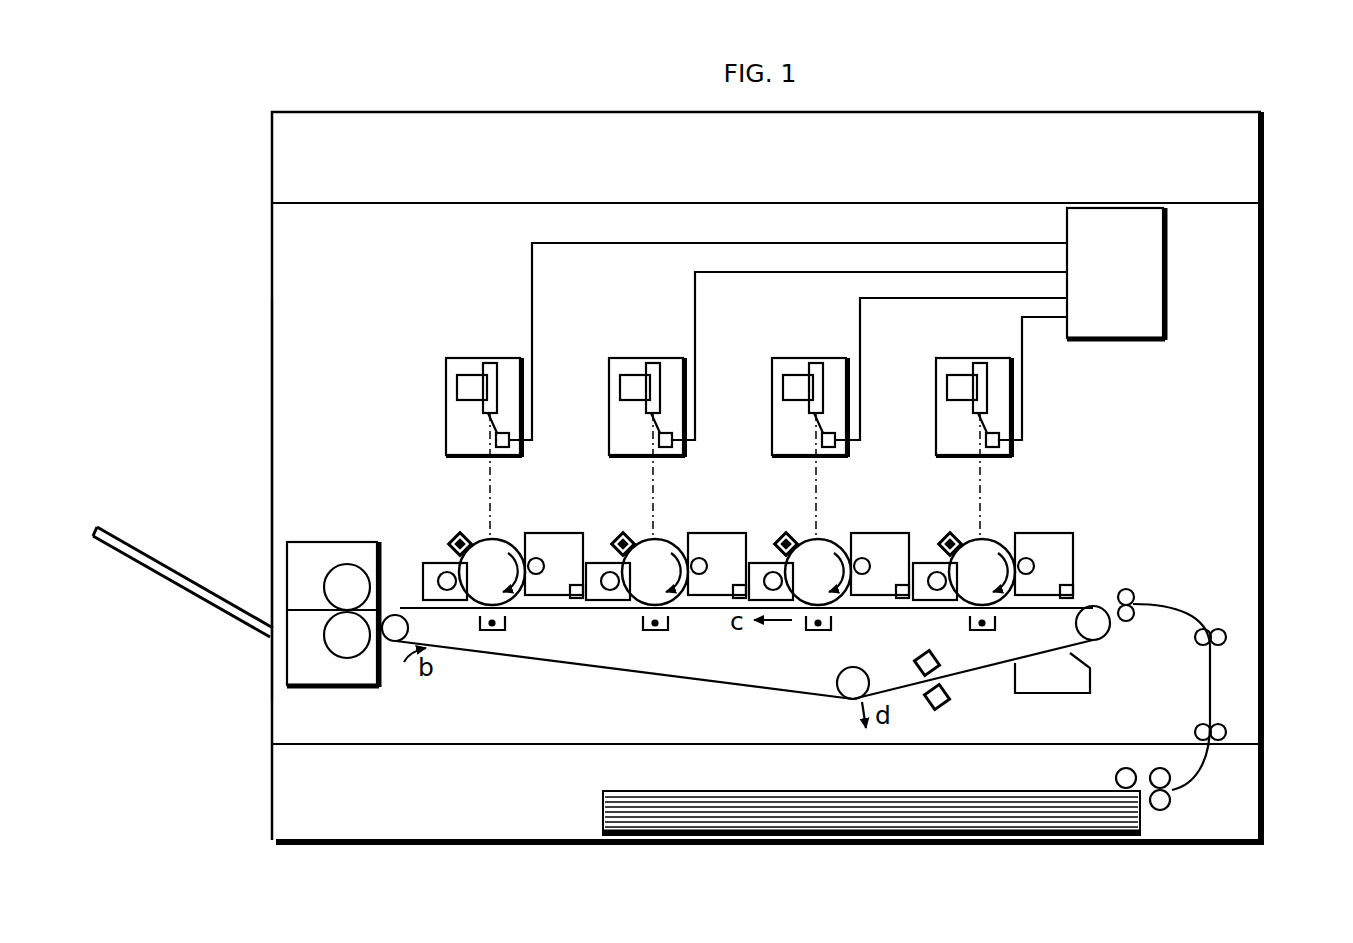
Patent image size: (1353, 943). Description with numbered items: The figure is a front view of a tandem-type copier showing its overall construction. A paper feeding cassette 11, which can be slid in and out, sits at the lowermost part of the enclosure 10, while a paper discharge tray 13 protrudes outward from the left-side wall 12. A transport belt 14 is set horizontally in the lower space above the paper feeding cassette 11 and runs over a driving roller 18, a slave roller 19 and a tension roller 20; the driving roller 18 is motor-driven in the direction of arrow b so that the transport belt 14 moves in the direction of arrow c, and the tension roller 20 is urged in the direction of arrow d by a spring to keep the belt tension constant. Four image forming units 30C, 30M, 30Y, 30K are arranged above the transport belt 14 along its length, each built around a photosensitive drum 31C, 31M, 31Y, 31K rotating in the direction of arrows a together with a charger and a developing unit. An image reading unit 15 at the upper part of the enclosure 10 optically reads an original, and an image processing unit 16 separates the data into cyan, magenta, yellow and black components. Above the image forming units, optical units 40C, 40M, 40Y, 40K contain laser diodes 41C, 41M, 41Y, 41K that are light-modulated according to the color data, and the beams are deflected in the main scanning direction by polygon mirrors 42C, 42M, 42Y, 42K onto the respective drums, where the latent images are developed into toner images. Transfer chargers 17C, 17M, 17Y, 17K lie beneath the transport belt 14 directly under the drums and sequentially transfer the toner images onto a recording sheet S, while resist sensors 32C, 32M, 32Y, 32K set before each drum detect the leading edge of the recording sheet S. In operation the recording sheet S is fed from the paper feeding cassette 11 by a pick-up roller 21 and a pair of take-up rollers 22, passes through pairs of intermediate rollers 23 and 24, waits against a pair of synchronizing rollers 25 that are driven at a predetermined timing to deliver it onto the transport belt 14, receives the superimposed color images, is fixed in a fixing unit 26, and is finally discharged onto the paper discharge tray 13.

The enclosure 10 is at (1270, 166).
The paper feeding cassette 11 is at (874, 842).
The left-side wall 12 is at (272, 443).
The paper discharge tray 13 is at (210, 600).
The transport belt 14 is at (565, 663).
The image reading unit 15 is at (1092, 140).
The image processing unit 16 is at (1165, 282).
The transfer charger 17K is at (480, 626).
The transfer charger 17Y is at (627, 631).
The transfer charger 17M is at (788, 642).
The transfer charger 17C is at (947, 631).
The driving roller 18 is at (396, 614).
The slave roller 19 is at (1098, 636).
The tension roller 20 is at (838, 692).
The pick-up roller 21 is at (1116, 772).
The pair of take-up rollers 22 is at (1174, 794).
The pair of intermediate rollers 23 is at (1226, 732).
The pair of intermediate rollers 24 is at (1226, 637).
The pair of synchronizing rollers 25 is at (1135, 592).
The fixing unit 26 is at (312, 540).
The image forming unit 30K is at (472, 526).
The image forming unit 30Y is at (614, 533).
The image forming unit 30M is at (779, 533).
The image forming unit 30C is at (942, 533).
The photosensitive drum 31K is at (492, 572).
The photosensitive drum 31Y is at (655, 572).
The photosensitive drum 31M is at (818, 572).
The photosensitive drum 31C is at (982, 572).
The resist sensor 32K is at (572, 598).
The resist sensor 32Y is at (711, 593).
The resist sensor 32M is at (870, 592).
The resist sensor 32C is at (1039, 592).
The optical unit 40K is at (480, 352).
The optical unit 40Y is at (647, 415).
The optical unit 40M is at (810, 415).
The optical unit 40C is at (974, 415).
The laser diode 41K is at (506, 449).
The laser diode 41Y is at (683, 455).
The laser diode 41M is at (849, 455).
The laser diode 41C is at (1011, 455).
The polygon mirror 42K is at (500, 357).
The polygon mirror 42Y is at (865, 356).
The polygon mirror 42M is at (946, 369).
The polygon mirror 42C is at (1039, 378).
The recording sheet S is at (990, 790).